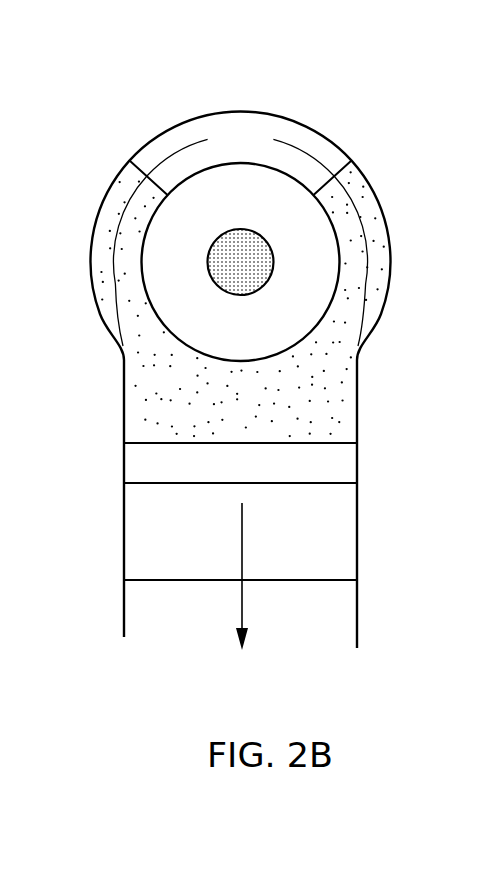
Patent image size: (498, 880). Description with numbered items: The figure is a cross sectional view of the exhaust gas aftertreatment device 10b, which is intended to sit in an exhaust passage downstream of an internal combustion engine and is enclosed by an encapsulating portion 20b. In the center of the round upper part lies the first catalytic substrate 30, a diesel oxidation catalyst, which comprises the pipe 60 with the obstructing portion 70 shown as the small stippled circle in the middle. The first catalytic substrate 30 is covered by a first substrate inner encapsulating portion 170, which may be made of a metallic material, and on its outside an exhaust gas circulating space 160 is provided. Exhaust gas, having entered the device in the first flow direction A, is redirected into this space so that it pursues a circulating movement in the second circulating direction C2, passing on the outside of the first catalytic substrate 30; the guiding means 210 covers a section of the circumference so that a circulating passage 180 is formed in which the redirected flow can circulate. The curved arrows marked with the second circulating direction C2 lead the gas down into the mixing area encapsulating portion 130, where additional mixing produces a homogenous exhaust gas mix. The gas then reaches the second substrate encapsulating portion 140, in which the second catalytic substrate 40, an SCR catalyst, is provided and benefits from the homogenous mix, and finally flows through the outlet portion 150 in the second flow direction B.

The exhaust gas aftertreatment device 10b is at (394, 131).
The encapsulating portion 20b is at (108, 188).
The first catalytic substrate 30 is at (322, 279).
The second catalytic substrate 40 is at (201, 554).
The pipe 60 is at (267, 282).
The obstructing portion 70 is at (254, 279).
The mixing area encapsulating portion 130 is at (124, 470).
The second substrate encapsulating portion 140 is at (124, 537).
The outlet portion 150 is at (124, 612).
The exhaust gas circulating space 160 is at (242, 133).
The first substrate inner encapsulating portion 170 is at (198, 170).
The circulating passage 180 is at (299, 140).
The guiding means 210 is at (337, 403).
The second circulating direction C2 is at (194, 414).
The first flow direction A is at (4, 211).
The second flow direction B is at (242, 598).